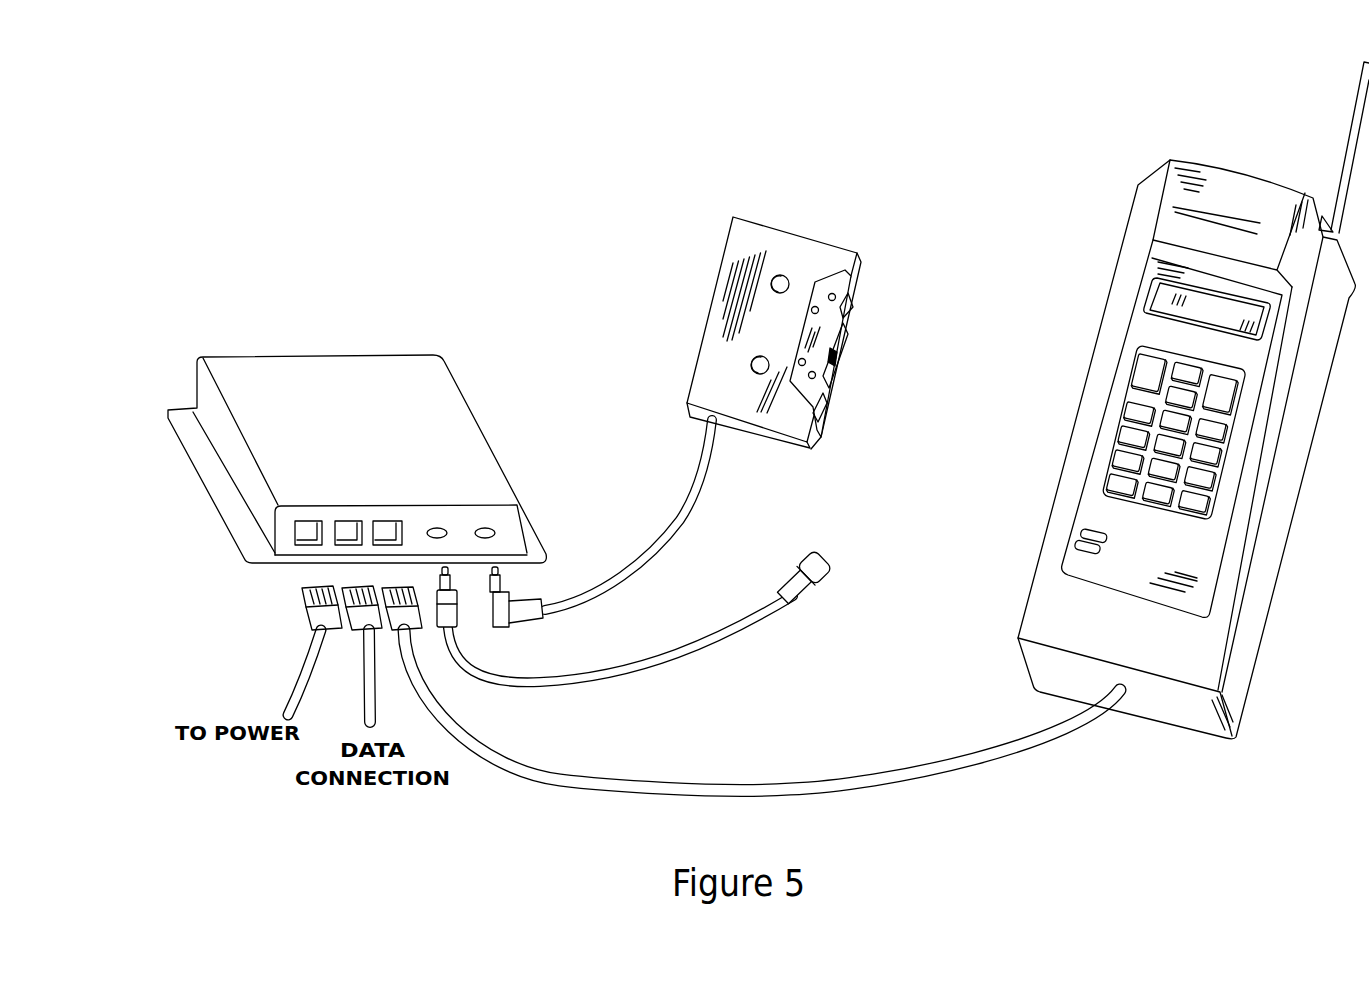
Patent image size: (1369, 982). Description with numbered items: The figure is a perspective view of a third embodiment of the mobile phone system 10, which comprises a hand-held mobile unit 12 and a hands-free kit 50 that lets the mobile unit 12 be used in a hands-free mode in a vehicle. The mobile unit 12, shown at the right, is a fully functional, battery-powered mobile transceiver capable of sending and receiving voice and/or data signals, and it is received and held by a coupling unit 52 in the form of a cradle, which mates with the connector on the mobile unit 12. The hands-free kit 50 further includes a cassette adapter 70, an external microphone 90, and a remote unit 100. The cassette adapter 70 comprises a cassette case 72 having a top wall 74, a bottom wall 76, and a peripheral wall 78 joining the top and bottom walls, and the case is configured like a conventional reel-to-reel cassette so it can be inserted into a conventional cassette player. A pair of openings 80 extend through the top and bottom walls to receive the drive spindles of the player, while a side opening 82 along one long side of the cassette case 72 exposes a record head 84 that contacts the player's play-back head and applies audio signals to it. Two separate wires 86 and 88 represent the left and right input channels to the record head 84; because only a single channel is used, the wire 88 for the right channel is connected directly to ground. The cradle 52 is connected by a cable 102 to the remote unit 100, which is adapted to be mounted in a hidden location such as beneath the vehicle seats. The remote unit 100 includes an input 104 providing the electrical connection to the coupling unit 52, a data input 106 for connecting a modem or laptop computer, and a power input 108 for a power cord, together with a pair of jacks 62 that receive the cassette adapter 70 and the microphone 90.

The mobile phone system 10 is at (943, 137).
The hand-held mobile unit 12 is at (1193, 400).
The hands-free kit 50 is at (897, 287).
The coupling unit 52 is at (1267, 630).
The jacks 62 is at (487, 528).
The cassette adapter 70 is at (761, 319).
The cassette case 72 is at (693, 352).
The top wall 74 is at (720, 320).
The bottom wall 76 is at (782, 447).
The peripheral wall 78 is at (736, 437).
The openings 80 is at (753, 372).
The side opening 82 is at (838, 337).
The record head 84 is at (838, 362).
The wire 86 is at (601, 533).
The wire 88 is at (517, 620).
The external microphone 90 is at (835, 568).
The remote unit 100 is at (364, 404).
The cable 102 is at (735, 790).
The input 104 is at (388, 525).
The data input 106 is at (352, 525).
The power input 108 is at (310, 525).